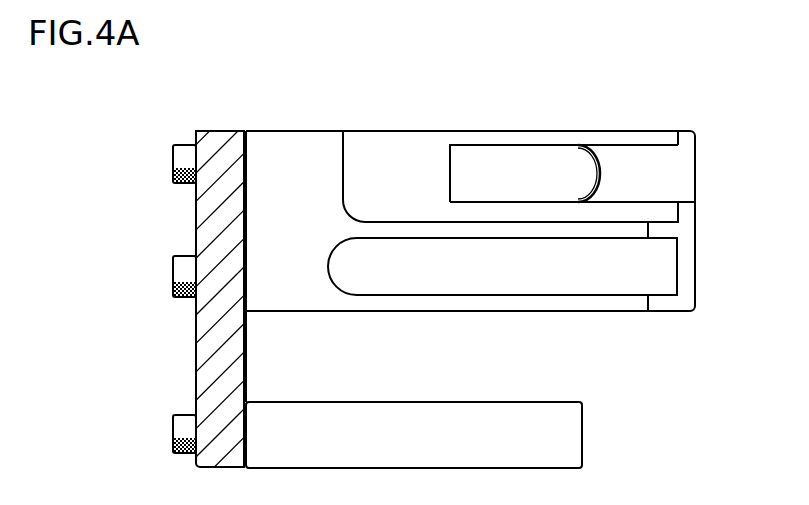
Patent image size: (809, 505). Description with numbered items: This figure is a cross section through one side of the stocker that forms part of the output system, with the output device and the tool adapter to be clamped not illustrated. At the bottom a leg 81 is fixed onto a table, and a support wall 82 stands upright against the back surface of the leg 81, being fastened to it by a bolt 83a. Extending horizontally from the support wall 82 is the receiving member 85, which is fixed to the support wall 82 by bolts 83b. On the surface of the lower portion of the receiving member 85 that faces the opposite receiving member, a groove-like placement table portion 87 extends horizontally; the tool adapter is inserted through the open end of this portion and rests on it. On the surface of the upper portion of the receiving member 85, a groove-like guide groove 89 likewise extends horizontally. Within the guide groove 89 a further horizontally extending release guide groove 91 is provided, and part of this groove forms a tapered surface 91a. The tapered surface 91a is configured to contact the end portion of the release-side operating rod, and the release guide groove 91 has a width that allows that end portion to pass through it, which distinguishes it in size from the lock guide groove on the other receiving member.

The leg 81 is at (582, 433).
The support wall 82 is at (220, 138).
The bolt 83a is at (173, 433).
The bolt 83b is at (173, 163).
The receiving member 85 is at (625, 131).
The placement table portion 87 is at (538, 267).
The guide groove 89 is at (608, 212).
The release guide groove 91 is at (667, 165).
The tapered surface 91a is at (520, 172).